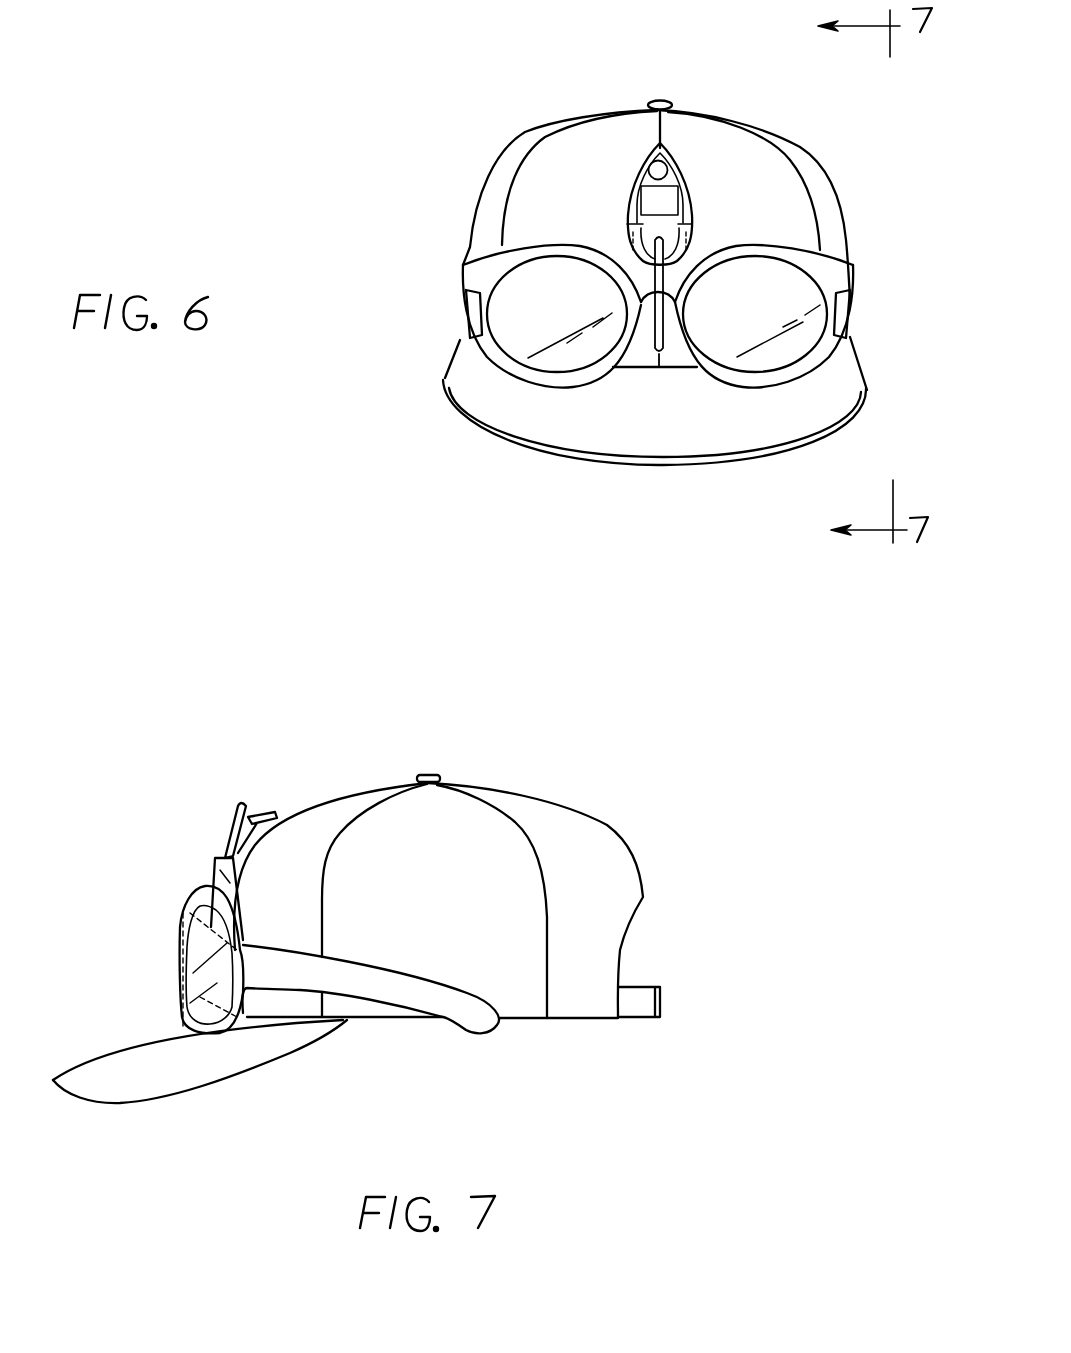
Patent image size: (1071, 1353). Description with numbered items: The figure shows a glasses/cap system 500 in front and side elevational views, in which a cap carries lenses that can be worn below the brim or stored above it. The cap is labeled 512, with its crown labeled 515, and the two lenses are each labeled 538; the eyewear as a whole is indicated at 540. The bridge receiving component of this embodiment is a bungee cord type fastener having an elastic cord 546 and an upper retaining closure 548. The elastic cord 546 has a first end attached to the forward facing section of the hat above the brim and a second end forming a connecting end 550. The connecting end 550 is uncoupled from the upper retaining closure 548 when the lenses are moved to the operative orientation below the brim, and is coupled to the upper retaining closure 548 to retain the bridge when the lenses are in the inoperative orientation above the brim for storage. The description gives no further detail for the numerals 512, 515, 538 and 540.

In FIG. 6, the glasses/cap system 500 is at (398, 257).
In FIG. 6, the headwear cap 512 is at (853, 257).
In FIG. 6, the crown 515 is at (837, 177).
In FIG. 6, the lens 538 is at (590, 313).
In FIG. 6, the eyewear 540 is at (670, 273).
In FIG. 6, the elastic cord 546 is at (640, 280).
In FIG. 7, the elastic cord 546 is at (187, 907).
In FIG. 6, the upper retaining closure 548 is at (696, 178).
In FIG. 7, the upper retaining closure 548 is at (213, 873).
In FIG. 6, the connecting end 550 is at (641, 168).
In FIG. 7, the connecting end 550 is at (227, 833).